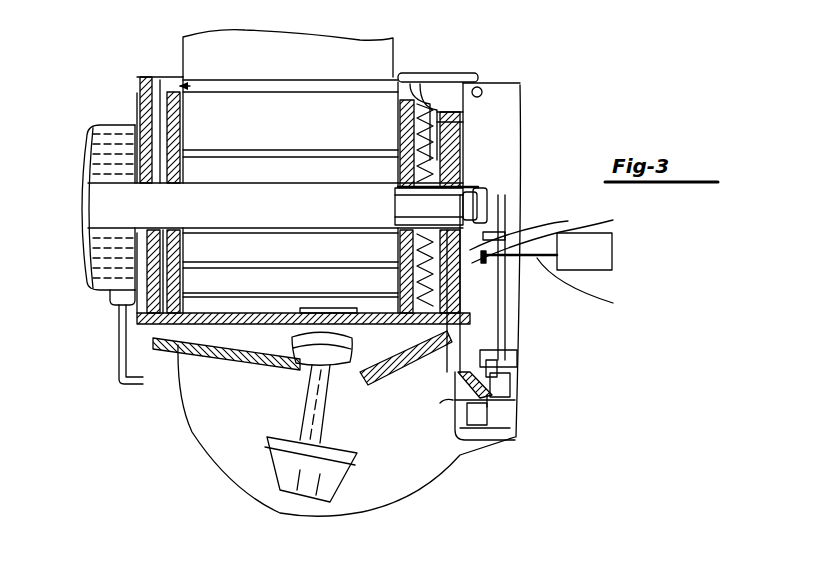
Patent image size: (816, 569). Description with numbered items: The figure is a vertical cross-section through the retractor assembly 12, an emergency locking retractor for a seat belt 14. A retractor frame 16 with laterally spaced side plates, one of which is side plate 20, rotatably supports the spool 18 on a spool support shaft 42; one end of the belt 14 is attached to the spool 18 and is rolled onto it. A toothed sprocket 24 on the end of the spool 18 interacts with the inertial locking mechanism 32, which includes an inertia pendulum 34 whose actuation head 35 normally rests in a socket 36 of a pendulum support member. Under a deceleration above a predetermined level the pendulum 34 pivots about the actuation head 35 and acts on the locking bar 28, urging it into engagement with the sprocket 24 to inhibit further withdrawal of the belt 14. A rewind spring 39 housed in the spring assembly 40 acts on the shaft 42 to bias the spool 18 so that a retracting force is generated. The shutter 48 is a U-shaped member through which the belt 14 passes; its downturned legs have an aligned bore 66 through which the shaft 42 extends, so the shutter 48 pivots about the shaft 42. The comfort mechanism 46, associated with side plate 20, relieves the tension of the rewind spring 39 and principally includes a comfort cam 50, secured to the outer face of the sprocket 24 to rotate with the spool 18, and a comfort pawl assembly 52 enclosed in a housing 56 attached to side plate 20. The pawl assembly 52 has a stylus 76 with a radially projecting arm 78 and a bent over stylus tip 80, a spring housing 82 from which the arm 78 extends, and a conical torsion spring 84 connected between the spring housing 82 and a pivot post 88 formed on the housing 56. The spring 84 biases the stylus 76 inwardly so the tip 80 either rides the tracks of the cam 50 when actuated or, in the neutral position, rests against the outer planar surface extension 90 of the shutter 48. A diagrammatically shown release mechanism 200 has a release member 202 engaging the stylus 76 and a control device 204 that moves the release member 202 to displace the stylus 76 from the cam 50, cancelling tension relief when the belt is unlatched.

The retractor assembly 12 is at (127, 395).
The belt 14 is at (374, 55).
The retractor frame 16 is at (503, 116).
The spool 18 is at (500, 337).
The side plate 20 is at (460, 149).
The toothed sprocket 24 is at (496, 289).
The locking bar 28 is at (190, 392).
The inertial locking mechanism 32 is at (417, 447).
The inertia pendulum 34 is at (312, 403).
The actuation head 35 is at (292, 364).
The socket 36 is at (362, 380).
The rewind spring 39 is at (108, 320).
The spring assembly 40 is at (77, 271).
The spool support shaft 42 is at (103, 213).
The comfort mechanism 46 is at (521, 383).
The shutter 48 is at (165, 88).
The comfort cam 50 is at (462, 160).
The comfort pawl assembly 52 is at (510, 392).
The housing 56 is at (440, 403).
The aligned bore 66 is at (97, 152).
The stylus 76 is at (507, 317).
The radially projecting arm 78 is at (532, 228).
The stylus tip 80 is at (490, 225).
The spring housing 82 is at (487, 407).
The conical torsion spring 84 is at (503, 360).
The pivot post 88 is at (507, 407).
The outer planar surface extension 90 is at (556, 235).
The release mechanism 200 is at (614, 282).
The release member 202 is at (595, 290).
The control device 204 is at (612, 251).